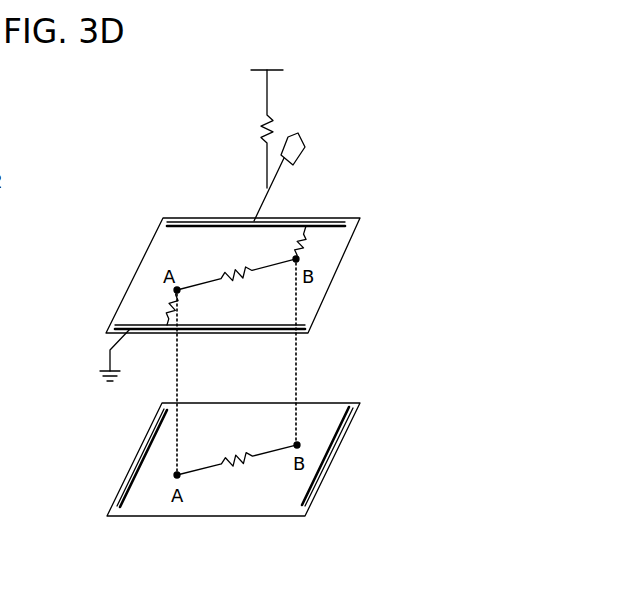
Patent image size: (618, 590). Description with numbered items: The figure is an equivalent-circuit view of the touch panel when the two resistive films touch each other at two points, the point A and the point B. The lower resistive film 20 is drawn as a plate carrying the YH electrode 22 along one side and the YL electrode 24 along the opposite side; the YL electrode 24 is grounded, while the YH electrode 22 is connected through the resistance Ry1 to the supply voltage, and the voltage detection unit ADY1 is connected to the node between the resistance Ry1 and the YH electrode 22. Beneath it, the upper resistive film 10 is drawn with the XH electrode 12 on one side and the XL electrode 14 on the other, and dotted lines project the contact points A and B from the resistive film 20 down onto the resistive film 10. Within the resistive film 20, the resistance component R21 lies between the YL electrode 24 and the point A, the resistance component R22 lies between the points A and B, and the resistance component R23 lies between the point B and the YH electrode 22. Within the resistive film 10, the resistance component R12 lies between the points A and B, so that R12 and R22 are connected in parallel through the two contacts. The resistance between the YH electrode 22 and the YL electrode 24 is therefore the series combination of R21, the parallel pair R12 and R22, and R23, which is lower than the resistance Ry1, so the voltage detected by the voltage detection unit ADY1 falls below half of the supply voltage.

The resistive film 10 is at (222, 516).
The XH electrode 12 is at (125, 478).
The XL electrode 14 is at (318, 480).
The resistive film 20 is at (135, 272).
The YH electrode 22 is at (346, 218).
The YL electrode 24 is at (305, 324).
The resistance Ry1 is at (247, 118).
The voltage detection unit ADY1 is at (307, 177).
The resistance component R12 is at (237, 457).
The resistance component R21 is at (152, 307).
The resistance component R22 is at (237, 279).
The resistance component R23 is at (282, 242).